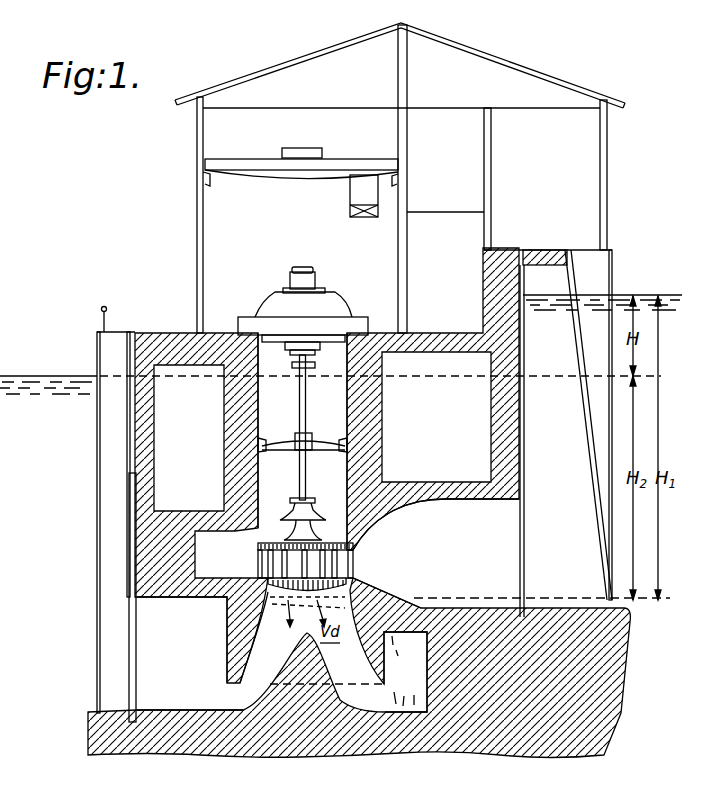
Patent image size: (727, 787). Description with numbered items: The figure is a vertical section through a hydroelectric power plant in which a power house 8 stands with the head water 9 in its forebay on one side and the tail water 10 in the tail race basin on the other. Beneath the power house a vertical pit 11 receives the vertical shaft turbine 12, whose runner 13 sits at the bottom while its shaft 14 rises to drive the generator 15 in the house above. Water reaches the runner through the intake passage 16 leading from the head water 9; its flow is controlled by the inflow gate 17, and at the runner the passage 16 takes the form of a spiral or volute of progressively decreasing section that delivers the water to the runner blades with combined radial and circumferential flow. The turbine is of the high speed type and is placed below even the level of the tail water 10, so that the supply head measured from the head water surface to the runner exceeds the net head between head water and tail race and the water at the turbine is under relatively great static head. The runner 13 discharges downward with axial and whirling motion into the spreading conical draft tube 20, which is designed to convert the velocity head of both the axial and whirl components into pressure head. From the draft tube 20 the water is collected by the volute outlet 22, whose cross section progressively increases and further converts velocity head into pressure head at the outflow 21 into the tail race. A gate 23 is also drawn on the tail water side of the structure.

The power house 8 is at (197, 197).
The head water 9 is at (653, 292).
The tail water 10 is at (31, 375).
The vertical pit 11 is at (325, 400).
The vertical shaft turbine 12 is at (300, 478).
The runner 13 is at (337, 560).
The shaft 14 is at (300, 403).
The generator 15 is at (336, 304).
The intake passage 16 is at (436, 553).
The inflow gate 17 is at (524, 470).
The draft tube 20 is at (283, 637).
The outflow 21 is at (190, 653).
The volute outlet 22 is at (405, 672).
The gate 23 is at (129, 543).